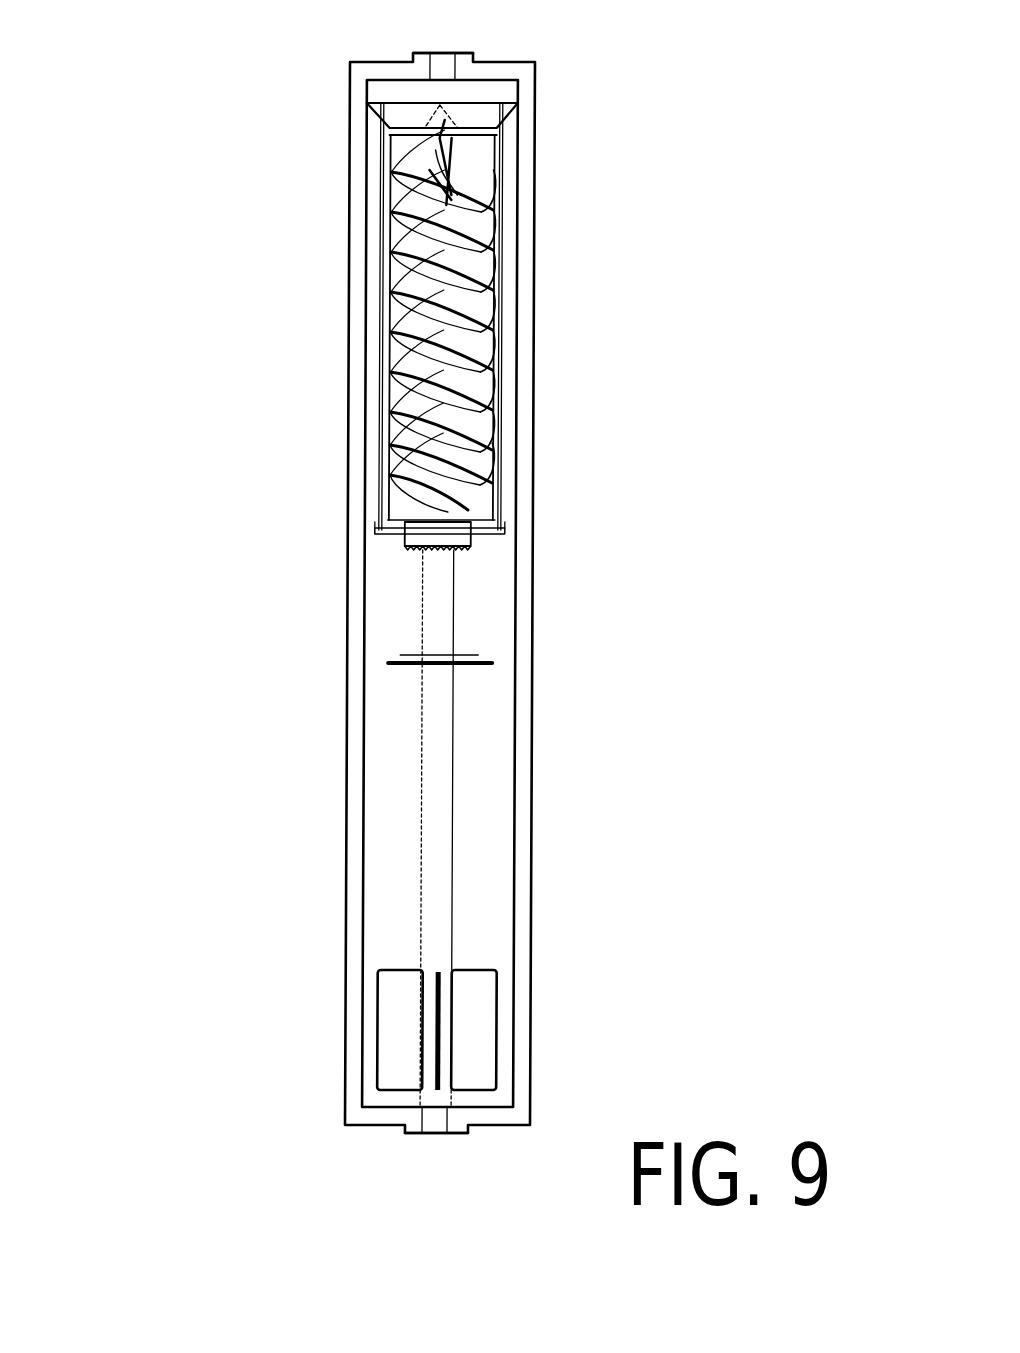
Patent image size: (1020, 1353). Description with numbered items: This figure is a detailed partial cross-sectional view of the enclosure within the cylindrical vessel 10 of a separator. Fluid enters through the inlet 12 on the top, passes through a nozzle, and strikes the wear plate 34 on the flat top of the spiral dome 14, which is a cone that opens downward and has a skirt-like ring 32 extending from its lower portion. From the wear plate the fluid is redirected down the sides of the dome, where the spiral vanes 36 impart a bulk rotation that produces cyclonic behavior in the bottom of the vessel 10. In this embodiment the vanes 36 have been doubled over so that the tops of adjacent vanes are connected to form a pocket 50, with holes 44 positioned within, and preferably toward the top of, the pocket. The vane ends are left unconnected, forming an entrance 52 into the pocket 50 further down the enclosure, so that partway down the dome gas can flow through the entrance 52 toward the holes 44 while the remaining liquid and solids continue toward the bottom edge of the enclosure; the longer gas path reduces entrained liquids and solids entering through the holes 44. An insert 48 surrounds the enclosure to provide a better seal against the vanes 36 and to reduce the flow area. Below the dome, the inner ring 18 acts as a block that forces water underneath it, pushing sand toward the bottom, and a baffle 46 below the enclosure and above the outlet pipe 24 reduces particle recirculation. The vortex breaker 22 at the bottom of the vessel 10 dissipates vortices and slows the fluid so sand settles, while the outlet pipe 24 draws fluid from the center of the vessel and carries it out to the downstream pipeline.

The vessel 10 is at (527, 69).
The inlet 12 is at (440, 62).
The wear plate 34 is at (497, 130).
The spiral vanes 36 is at (397, 158).
The holes 44 is at (457, 163).
The pocket 50 is at (458, 195).
The spiral dome 14 is at (420, 292).
The entrance 52 is at (467, 268).
The insert 48 is at (498, 437).
The ring 32 is at (402, 517).
The inner ring 18 is at (473, 538).
The baffle 46 is at (490, 663).
The vortex breaker 22 is at (388, 1038).
The outlet pipe 24 is at (437, 1127).